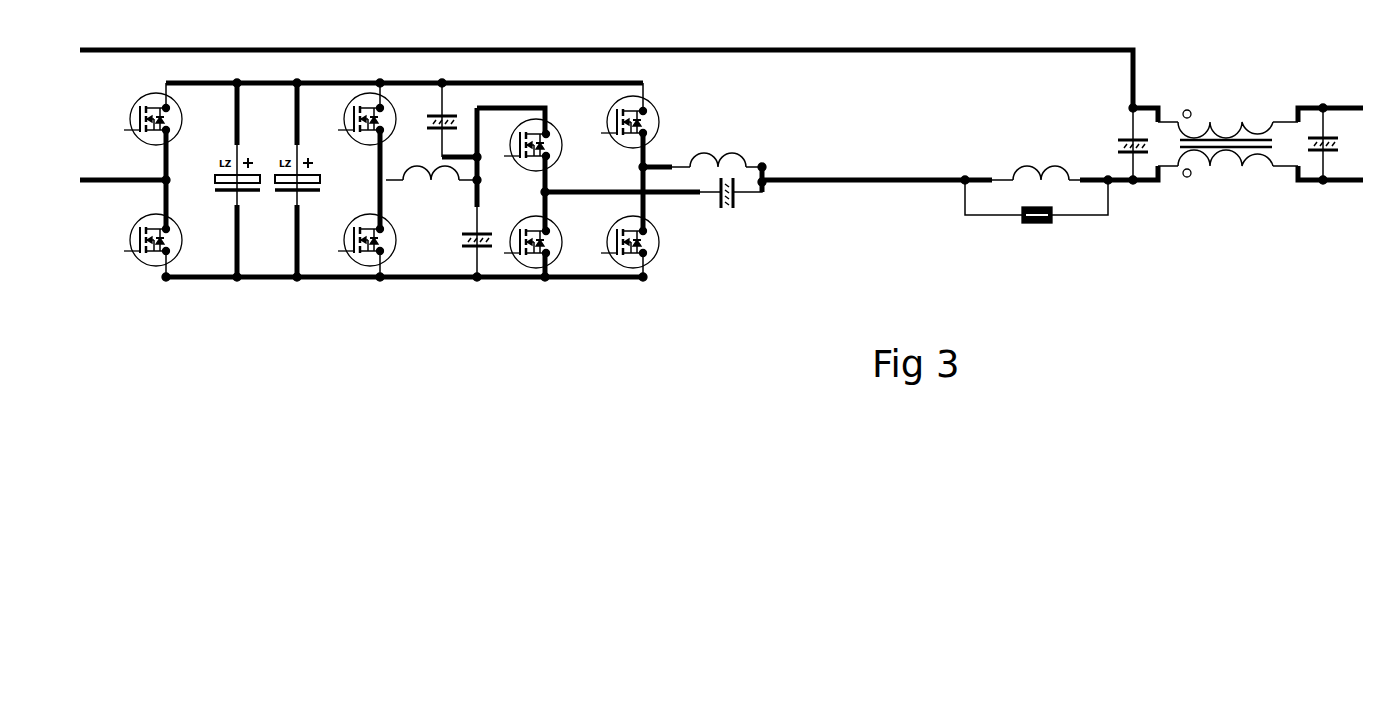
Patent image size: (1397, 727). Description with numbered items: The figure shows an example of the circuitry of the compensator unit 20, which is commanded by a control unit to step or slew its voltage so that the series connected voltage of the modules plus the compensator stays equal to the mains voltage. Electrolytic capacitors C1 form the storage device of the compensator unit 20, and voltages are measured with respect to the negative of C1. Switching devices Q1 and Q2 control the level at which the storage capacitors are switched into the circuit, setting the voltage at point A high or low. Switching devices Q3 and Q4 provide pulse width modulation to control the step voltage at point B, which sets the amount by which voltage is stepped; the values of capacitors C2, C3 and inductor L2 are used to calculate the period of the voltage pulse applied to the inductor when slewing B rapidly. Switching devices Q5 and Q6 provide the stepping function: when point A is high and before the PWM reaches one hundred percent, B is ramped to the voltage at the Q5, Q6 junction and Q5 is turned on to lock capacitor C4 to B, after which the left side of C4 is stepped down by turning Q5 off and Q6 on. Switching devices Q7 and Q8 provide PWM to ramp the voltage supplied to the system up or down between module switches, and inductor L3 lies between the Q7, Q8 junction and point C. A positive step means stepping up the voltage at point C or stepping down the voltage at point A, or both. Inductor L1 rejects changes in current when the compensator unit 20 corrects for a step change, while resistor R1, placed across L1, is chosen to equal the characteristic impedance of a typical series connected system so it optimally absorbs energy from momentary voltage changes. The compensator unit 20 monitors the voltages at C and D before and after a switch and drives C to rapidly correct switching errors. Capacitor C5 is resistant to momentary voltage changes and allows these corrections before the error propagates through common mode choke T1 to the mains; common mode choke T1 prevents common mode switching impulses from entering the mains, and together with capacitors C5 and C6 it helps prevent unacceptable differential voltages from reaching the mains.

The compensator unit 20 is at (328, 458).
The switching device Q1 is at (139, 133).
The switching device Q2 is at (139, 250).
The switching device Q3 is at (365, 137).
The switching device Q4 is at (365, 232).
The switching device Q5 is at (545, 149).
The switching device Q6 is at (545, 237).
The switching device Q7 is at (641, 117).
The switching device Q8 is at (641, 237).
The electrolytic capacitors C1 is at (267, 180).
The capacitor C2 is at (460, 242).
The capacitor C3 is at (430, 120).
The capacitor C4 is at (728, 208).
The capacitor C5 is at (1117, 144).
The capacitor C6 is at (1323, 127).
The inductor L1 is at (1029, 164).
The inductor L2 is at (431, 165).
The inductor L3 is at (718, 151).
The resistor R1 is at (1036, 215).
The common mode choke T1 is at (1225, 132).
The point A is at (176, 193).
The point B is at (486, 188).
The point C is at (773, 165).
The point D is at (1128, 196).